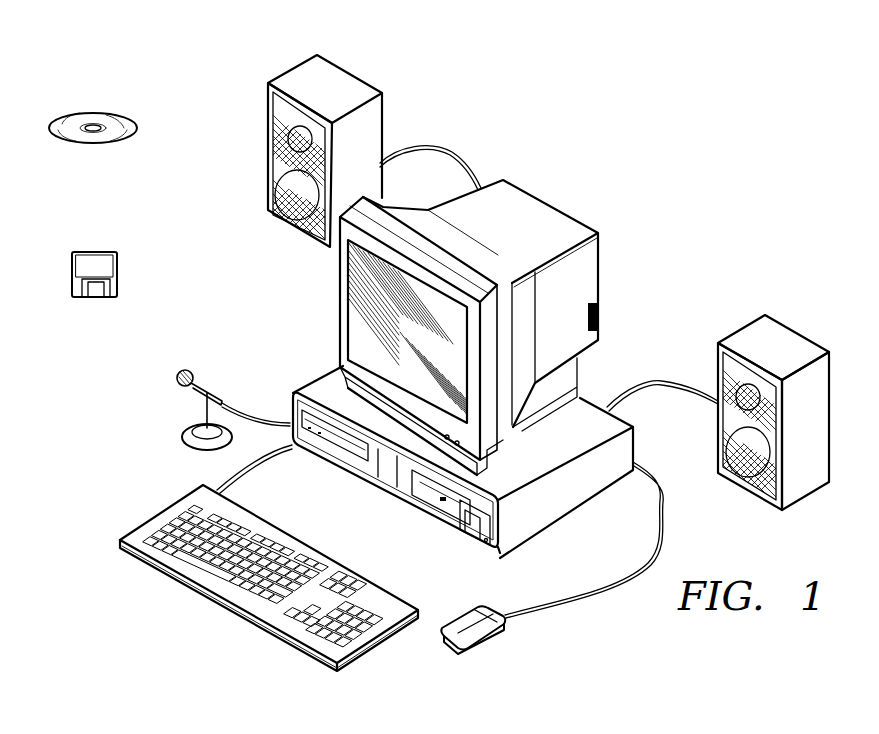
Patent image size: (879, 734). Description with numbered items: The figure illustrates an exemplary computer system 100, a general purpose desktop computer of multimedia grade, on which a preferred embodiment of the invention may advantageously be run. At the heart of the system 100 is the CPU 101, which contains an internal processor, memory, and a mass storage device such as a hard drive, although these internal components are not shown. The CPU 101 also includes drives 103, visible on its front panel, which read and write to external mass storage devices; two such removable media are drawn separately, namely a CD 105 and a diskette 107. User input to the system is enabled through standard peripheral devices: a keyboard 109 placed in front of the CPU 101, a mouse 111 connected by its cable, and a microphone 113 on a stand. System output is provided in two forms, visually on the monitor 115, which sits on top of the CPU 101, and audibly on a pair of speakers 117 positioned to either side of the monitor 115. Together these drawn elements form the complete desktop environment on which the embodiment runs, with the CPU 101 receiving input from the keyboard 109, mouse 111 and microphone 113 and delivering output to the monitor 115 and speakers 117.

The computer system 100 is at (607, 115).
The CPU 101 is at (320, 380).
The drives 103 is at (345, 443).
The CD 105 is at (93, 117).
The diskette 107 is at (93, 250).
The keyboard 109 is at (137, 533).
The mouse 111 is at (483, 644).
The microphone 113 is at (183, 369).
The monitor 115 is at (544, 215).
The speakers 117 is at (301, 73).